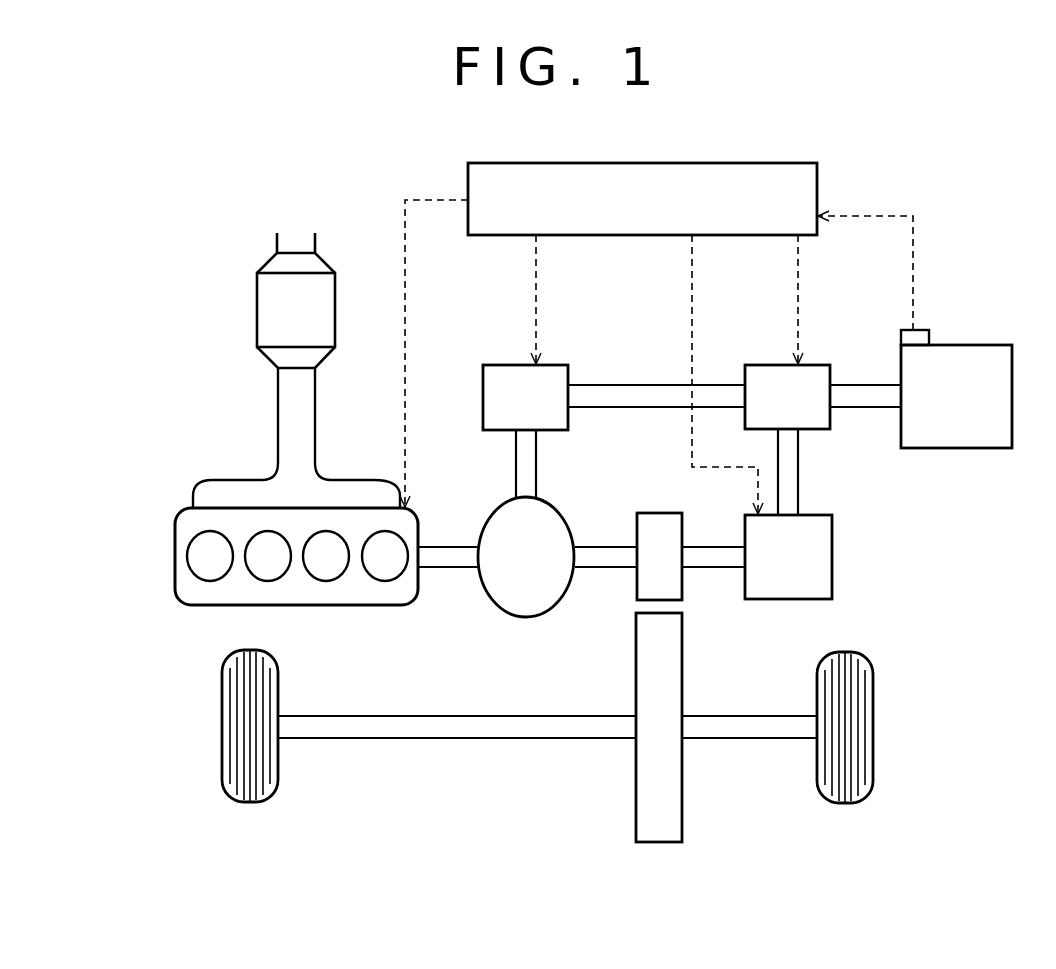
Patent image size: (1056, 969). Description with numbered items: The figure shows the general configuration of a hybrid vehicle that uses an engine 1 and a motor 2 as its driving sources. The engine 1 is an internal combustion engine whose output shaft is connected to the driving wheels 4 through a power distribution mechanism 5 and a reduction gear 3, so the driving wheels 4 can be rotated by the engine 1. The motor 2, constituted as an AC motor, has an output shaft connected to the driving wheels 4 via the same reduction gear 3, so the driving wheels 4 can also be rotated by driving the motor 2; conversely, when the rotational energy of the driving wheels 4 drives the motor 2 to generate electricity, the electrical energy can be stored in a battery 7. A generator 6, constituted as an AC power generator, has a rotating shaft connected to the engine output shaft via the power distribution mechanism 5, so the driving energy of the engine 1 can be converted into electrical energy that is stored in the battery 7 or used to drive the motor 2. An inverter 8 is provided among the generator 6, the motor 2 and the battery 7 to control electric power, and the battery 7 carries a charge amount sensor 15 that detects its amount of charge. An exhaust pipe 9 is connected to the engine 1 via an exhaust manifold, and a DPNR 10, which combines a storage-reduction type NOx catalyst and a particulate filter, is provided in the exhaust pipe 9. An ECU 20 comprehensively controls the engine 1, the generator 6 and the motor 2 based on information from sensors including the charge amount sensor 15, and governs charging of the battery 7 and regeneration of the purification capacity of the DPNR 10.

The engine 1 is at (330, 605).
The motor 2 is at (832, 557).
The reduction gear 3 is at (636, 667).
The driving wheels 4 is at (873, 757).
The power distribution mechanism 5 is at (490, 512).
The generator 6 is at (525, 364).
The battery 7 is at (957, 448).
The inverter 8 is at (777, 364).
The exhaust pipe 9 is at (278, 418).
The DPNR 10 is at (257, 305).
The charge amount sensor 15 is at (928, 330).
The ECU (electronic control unit) 20 is at (817, 187).